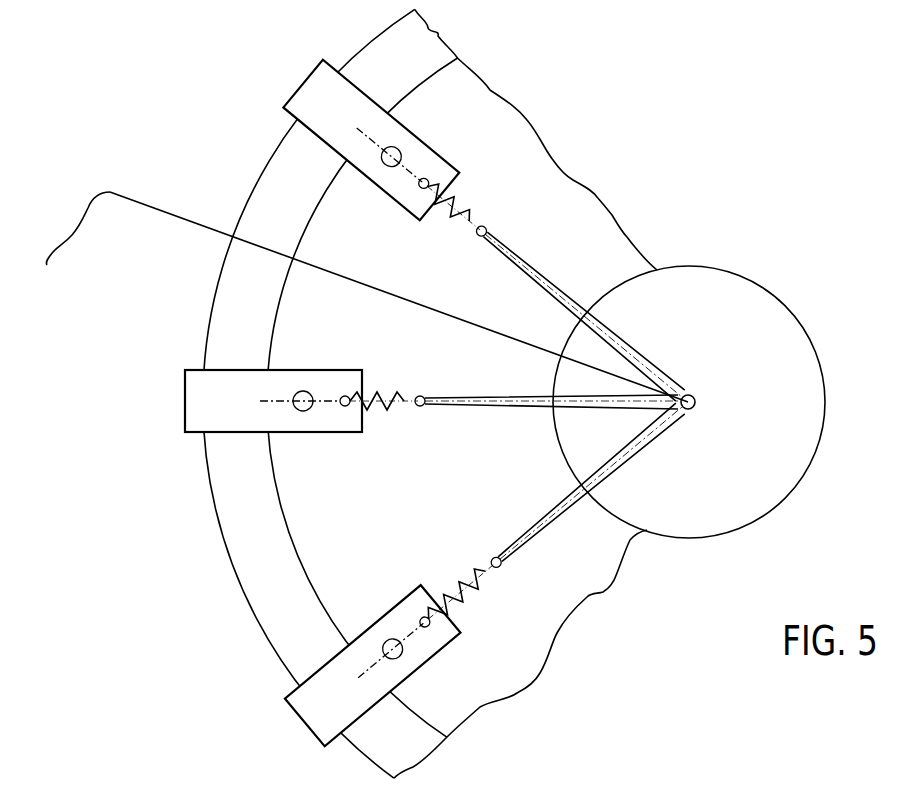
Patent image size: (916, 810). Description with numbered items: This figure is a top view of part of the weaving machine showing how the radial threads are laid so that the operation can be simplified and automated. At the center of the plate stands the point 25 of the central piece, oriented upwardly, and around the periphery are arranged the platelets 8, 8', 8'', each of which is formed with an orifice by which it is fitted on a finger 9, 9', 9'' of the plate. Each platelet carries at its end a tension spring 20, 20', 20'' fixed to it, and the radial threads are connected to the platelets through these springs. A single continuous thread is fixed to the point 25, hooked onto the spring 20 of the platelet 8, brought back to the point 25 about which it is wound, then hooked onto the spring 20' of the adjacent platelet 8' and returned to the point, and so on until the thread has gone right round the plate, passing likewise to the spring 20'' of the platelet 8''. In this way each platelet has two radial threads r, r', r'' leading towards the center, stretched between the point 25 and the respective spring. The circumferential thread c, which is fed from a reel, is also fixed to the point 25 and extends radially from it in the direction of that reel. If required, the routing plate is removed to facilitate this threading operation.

The platelet 8 is at (373, 685).
The adjacent platelet 8' is at (262, 427).
The platelet 8'' is at (362, 129).
The finger 9 is at (423, 666).
The finger 9' is at (308, 437).
The finger 9'' is at (380, 187).
The tension spring 20 is at (476, 594).
The tension spring 20' is at (386, 427).
The tension spring 20'' is at (450, 221).
The point 25 is at (697, 405).
The circumferential thread c is at (157, 207).
The radial thread r is at (587, 486).
The radial thread r' is at (547, 381).
The radial thread r'' is at (579, 313).